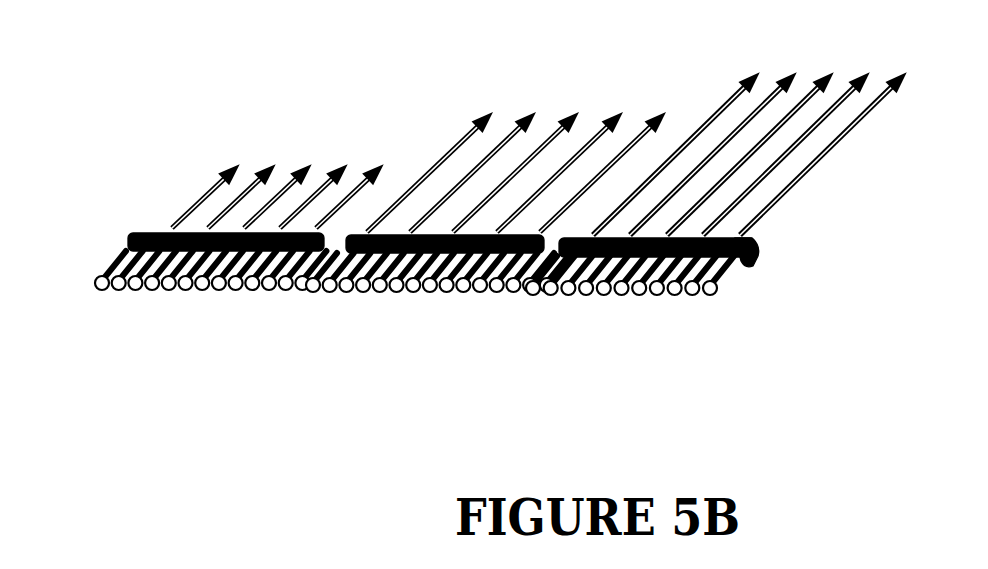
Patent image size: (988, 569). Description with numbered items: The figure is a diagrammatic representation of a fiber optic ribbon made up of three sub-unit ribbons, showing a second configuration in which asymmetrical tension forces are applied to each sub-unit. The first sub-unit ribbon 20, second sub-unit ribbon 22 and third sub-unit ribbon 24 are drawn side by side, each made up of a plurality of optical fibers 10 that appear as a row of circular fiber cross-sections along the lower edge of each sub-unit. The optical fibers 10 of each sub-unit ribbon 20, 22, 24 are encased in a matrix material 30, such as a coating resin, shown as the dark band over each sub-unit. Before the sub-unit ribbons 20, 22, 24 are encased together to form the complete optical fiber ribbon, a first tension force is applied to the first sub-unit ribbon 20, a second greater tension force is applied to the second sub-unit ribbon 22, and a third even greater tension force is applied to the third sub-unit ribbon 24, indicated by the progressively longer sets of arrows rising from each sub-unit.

The optical fibers 10 is at (248, 288).
The first sub-unit ribbon 20 is at (140, 312).
The second sub-unit ribbon 22 is at (449, 321).
The third sub-unit ribbon 24 is at (658, 310).
The matrix material 30 is at (757, 251).